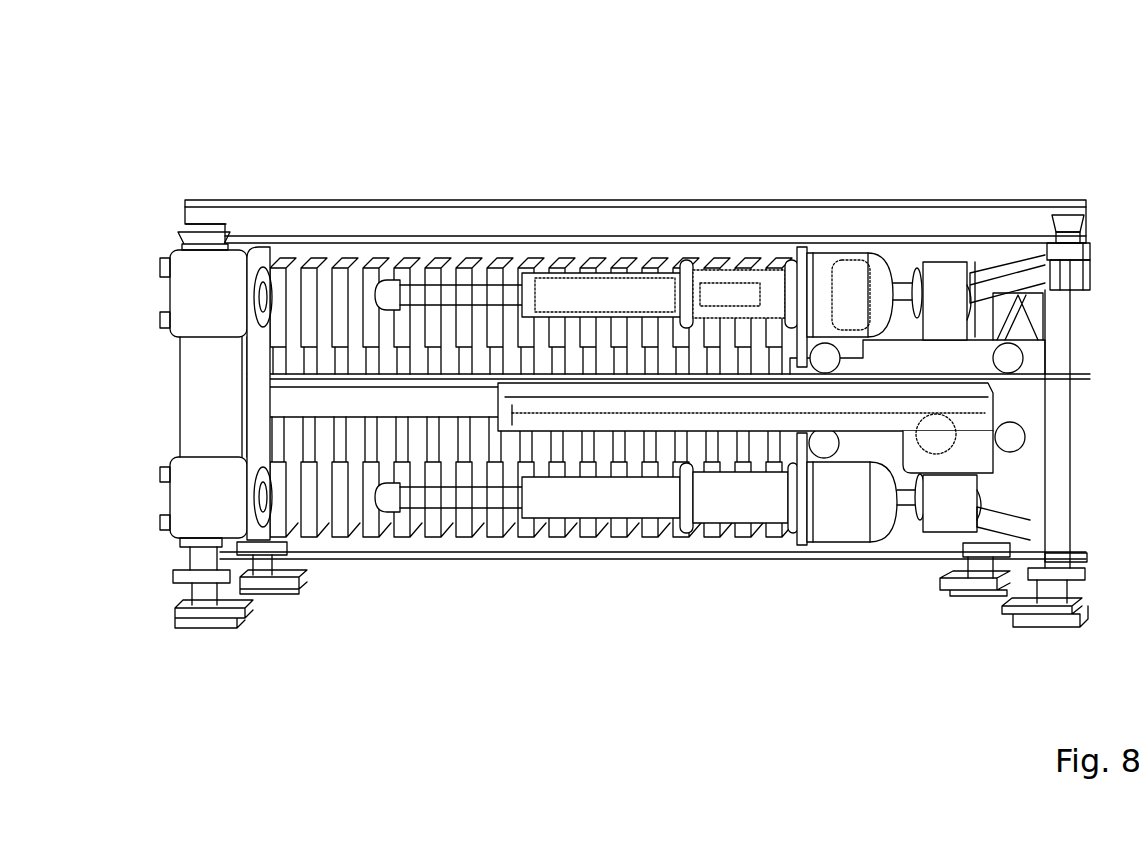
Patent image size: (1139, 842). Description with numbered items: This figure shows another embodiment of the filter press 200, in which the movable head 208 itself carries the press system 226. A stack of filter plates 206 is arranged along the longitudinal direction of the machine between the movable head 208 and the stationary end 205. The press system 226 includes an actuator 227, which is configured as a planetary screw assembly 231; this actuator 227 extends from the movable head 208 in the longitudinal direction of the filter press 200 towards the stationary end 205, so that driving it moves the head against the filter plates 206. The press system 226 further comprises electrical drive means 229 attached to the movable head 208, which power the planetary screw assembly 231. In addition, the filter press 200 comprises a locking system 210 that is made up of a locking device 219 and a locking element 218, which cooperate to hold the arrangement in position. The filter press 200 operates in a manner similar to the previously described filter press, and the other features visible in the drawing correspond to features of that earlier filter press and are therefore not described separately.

The filter press 200 is at (361, 94).
The locking system 210 is at (235, 192).
The stationary end 205 is at (236, 409).
The filter plates 206 is at (340, 285).
The locking element 218 is at (470, 300).
The actuator 227 is at (745, 245).
The planetary screw assembly 231 is at (770, 255).
The press system 226 is at (848, 222).
The electrical drive means 229 is at (944, 272).
The movable head 208 is at (866, 513).
The locking device 219 is at (165, 527).